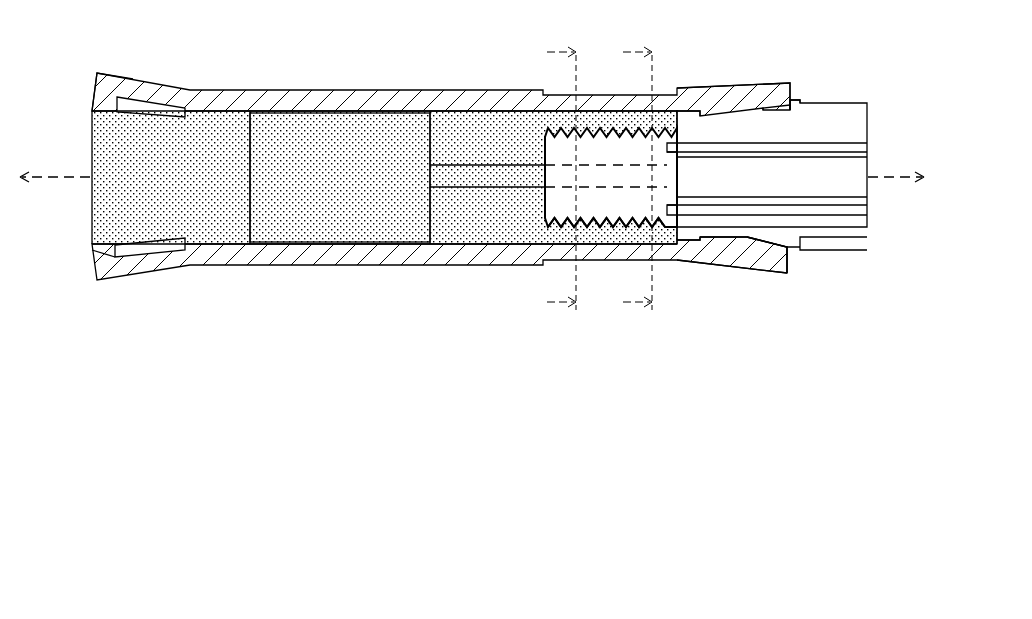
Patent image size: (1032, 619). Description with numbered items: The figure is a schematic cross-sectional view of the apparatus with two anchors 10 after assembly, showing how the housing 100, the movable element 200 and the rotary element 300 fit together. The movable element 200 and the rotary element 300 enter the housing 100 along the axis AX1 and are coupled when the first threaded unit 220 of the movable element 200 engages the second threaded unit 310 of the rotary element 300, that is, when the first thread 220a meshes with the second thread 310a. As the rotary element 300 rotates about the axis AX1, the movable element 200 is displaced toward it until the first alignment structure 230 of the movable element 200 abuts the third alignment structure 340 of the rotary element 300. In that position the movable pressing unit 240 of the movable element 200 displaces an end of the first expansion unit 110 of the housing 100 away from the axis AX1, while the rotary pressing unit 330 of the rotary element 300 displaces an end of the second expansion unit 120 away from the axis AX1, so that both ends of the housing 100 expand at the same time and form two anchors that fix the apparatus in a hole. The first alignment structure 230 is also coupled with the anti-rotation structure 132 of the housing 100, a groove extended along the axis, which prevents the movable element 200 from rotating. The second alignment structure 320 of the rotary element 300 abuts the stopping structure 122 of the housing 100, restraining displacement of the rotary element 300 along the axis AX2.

The apparatus with two anchors 10 is at (893, 387).
The housing 100 is at (371, 92).
The first expansion unit 110 is at (163, 92).
The second expansion unit 120 is at (724, 86).
The stopping structure 122 is at (763, 98).
The anti-rotation structure 132 is at (668, 262).
The movable element 200 is at (292, 113).
The first threaded unit 220 is at (548, 215).
The first thread 220a is at (611, 177).
The first alignment structure 230 is at (712, 256).
The movable pressing unit 240 is at (133, 90).
The rotary element 300 is at (840, 122).
The second threaded unit 310 is at (606, 222).
The second thread 310a is at (580, 217).
The second alignment structure 320 is at (794, 97).
The rotary pressing unit 330 is at (745, 283).
The third alignment structure 340 is at (690, 112).
The axis AX1 is at (902, 156).
The axis AX2 is at (55, 155).